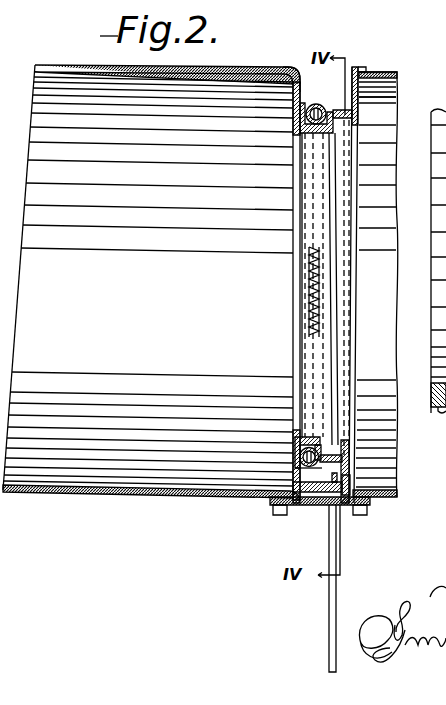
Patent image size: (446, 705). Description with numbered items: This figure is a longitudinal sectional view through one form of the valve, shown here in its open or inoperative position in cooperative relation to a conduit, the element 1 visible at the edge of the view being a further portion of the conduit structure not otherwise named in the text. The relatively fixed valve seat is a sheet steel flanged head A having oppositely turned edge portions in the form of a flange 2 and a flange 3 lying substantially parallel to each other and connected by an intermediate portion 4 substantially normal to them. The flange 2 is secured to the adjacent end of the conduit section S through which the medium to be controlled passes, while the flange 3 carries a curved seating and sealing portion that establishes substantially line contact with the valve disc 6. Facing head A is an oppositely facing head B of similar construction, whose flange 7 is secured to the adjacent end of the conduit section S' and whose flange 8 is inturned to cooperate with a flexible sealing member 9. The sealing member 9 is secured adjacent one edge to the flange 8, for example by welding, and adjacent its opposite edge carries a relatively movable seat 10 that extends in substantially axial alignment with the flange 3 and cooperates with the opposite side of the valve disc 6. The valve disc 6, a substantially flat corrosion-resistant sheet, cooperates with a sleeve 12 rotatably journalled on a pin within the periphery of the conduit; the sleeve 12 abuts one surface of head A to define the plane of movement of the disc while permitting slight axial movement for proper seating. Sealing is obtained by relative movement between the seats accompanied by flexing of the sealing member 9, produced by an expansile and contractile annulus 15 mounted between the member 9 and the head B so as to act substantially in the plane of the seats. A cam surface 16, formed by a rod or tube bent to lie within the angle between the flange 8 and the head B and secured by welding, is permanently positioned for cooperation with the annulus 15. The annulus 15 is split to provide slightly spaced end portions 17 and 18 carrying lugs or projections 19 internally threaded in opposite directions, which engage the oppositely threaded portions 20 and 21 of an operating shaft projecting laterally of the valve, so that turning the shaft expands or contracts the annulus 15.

The adjacent door panel 1 is at (438, 261).
The flange 2 is at (364, 67).
The flange 3 is at (354, 118).
The intermediate portion 4 is at (376, 88).
The valve disc 6 is at (329, 608).
The flange 7 is at (289, 66).
The flange 8 is at (301, 133).
The flexible sealing member 9 is at (323, 135).
The movable seat 10 is at (322, 457).
The sleeve 12 is at (313, 505).
The expansile and contractile annulus 15 is at (326, 94).
The cam surface 16 is at (296, 444).
The end portion 17 is at (300, 295).
The end portion 18 is at (305, 272).
The lugs or projections 19 is at (333, 289).
The threaded portion 20 is at (305, 253).
The threaded portion 21 is at (289, 329).
The conduit section S' is at (151, 269).
The conduit section S is at (382, 268).
The flanged head A is at (380, 100).
The head B is at (293, 108).